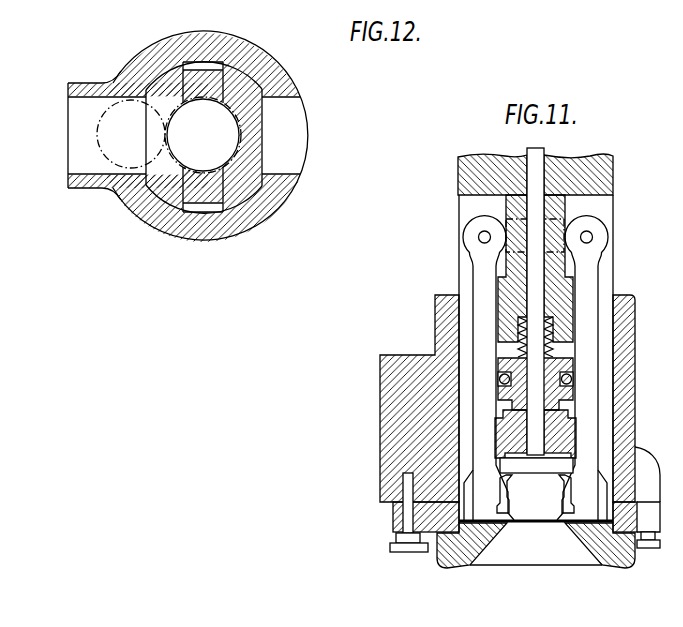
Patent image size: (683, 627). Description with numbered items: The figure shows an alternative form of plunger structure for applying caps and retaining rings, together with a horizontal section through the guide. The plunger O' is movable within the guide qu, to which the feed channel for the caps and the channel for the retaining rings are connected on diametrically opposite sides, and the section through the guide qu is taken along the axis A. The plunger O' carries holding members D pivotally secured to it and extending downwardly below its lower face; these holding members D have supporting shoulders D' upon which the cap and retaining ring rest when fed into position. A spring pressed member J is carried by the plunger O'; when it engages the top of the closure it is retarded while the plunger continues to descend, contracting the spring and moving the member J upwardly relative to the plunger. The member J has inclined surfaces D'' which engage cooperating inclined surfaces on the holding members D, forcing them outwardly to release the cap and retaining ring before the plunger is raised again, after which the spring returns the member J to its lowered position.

In FIG. 12, the guide qu is at (267, 68).
In FIG. 12, the holding members D is at (220, 140).
In FIG. 11, the holding members D is at (536, 554).
In FIG. 12, the axis of bore A is at (110, 108).
In FIG. 11, the plunger O' is at (559, 174).
In FIG. 11, the inclined surfaces D'' is at (551, 387).
In FIG. 11, the spring pressed member J is at (555, 437).
In FIG. 11, the supporting shoulders D' is at (535, 507).